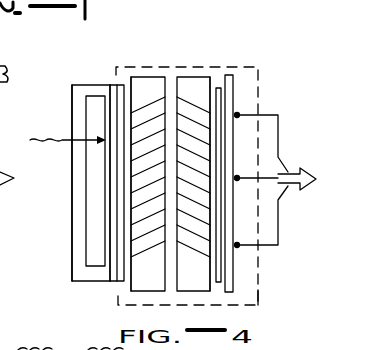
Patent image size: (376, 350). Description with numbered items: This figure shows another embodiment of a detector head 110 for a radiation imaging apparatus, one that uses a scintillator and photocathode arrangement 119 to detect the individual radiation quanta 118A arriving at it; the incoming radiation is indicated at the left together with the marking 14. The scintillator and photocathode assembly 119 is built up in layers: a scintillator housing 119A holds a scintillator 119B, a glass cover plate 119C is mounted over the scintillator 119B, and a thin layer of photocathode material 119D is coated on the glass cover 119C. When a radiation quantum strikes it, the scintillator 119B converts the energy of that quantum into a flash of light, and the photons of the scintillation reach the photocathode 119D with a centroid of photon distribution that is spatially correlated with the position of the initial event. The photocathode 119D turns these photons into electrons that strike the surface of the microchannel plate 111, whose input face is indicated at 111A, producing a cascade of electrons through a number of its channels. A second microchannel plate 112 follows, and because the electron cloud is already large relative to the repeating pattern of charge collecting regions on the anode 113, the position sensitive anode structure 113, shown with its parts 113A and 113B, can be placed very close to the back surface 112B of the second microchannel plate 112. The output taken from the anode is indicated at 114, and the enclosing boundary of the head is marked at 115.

The detector head 110 is at (202, 45).
The microchannel plate 111 is at (142, 79).
The first electrode surface 111A is at (130, 78).
The second microchannel plate 112 is at (193, 78).
The back surface of the second microchannel plate 112B is at (211, 78).
The position sensitive anode structure 113 is at (258, 169).
The collector layer 113A is at (229, 93).
The collector layer 113B is at (220, 89).
The electrical output 114 is at (292, 165).
The housing 115 is at (259, 289).
The radiation quanta 118A is at (62, 139).
The radiation 14 is at (0, 158).
The scintillator and photocathode arrangement 119 is at (62, 205).
The scintillator housing 119A is at (78, 240).
The scintillator 119B is at (95, 198).
The glass cover plate 119C is at (113, 208).
The photocathode material 119D is at (123, 179).